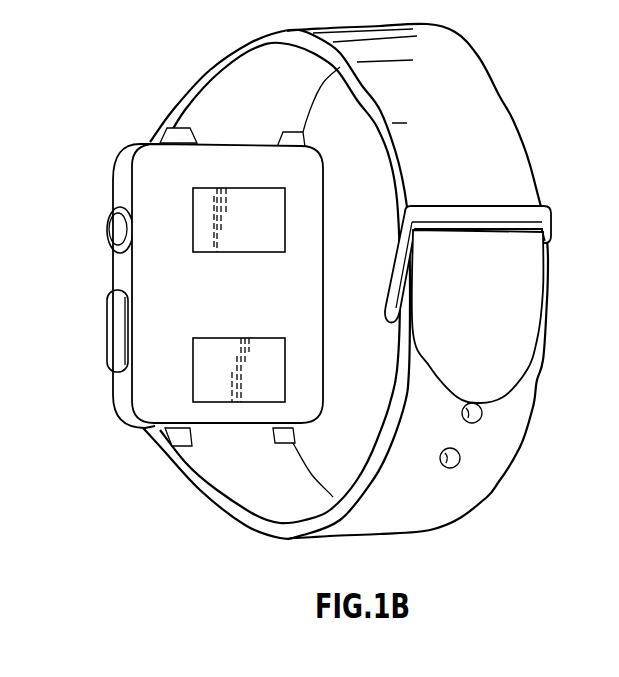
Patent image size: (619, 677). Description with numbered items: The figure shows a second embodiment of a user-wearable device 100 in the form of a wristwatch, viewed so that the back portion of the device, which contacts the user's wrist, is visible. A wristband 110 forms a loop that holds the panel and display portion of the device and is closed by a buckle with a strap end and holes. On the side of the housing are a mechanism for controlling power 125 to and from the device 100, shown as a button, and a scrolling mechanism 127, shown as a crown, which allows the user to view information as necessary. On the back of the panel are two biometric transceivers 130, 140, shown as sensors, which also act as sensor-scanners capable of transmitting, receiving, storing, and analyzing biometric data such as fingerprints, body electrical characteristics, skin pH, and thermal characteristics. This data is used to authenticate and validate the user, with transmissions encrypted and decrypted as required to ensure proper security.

The user-wearable device 100 is at (304, 281).
The wristband 110 is at (492, 108).
The mechanism for controlling power 125 is at (108, 335).
The scrolling mechanism 127 is at (108, 232).
The biometric transceiver 130 is at (277, 222).
The biometric transceiver 140 is at (277, 377).